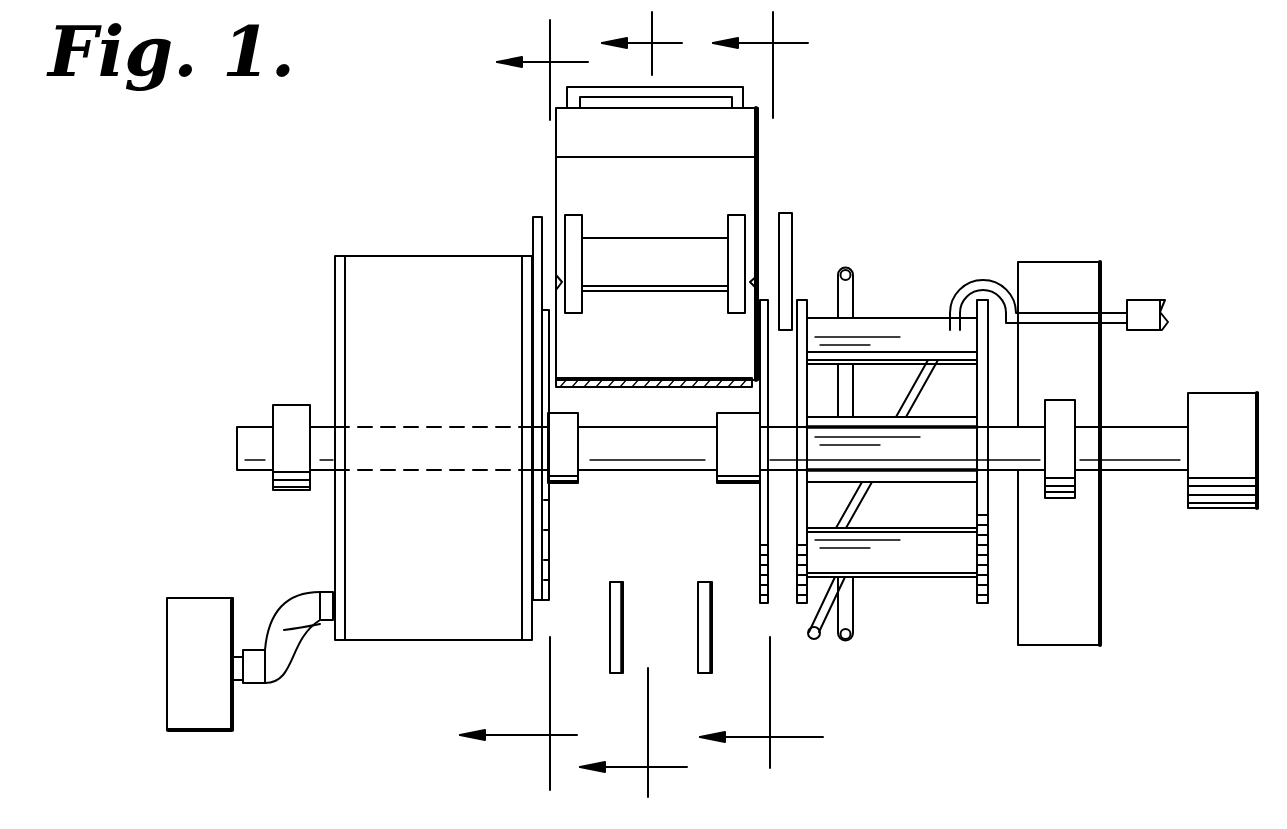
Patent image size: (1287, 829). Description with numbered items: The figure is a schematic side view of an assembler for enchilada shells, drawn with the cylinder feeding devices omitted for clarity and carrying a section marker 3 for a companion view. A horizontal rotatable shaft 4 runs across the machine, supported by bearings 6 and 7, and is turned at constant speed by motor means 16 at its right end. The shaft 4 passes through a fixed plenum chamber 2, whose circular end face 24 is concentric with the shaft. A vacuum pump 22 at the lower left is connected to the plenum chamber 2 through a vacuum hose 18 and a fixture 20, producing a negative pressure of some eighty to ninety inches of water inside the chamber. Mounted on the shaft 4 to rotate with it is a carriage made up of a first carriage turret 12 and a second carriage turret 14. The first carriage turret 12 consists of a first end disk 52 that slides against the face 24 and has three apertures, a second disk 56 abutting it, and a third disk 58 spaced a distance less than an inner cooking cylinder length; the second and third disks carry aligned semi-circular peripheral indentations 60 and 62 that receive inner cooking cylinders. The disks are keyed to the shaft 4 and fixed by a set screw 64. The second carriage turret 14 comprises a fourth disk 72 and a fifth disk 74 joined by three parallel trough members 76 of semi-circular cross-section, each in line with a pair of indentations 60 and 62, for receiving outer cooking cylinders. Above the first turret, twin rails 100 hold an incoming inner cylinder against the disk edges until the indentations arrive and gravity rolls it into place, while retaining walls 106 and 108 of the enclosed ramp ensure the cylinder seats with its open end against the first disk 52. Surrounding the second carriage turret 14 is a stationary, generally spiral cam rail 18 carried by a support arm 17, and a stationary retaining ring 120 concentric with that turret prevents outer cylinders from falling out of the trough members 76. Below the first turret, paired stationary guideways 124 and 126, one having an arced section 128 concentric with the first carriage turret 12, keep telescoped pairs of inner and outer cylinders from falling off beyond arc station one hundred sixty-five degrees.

The plenum chamber 2 is at (446, 260).
The section line 3- 3 is at (761, 395).
The horizontal rotatable shaft 4 is at (660, 471).
The bearing 6 is at (288, 514).
The bearing 7 is at (1076, 400).
The first carriage turret 12 is at (650, 646).
The second carriage turret 14 is at (900, 263).
The motor means 16 is at (1228, 400).
The support arm 17 is at (1058, 303).
The cam rail / vacuum hose 18 is at (267, 677).
The fixture 20 is at (328, 636).
The vacuum pump 22 is at (182, 694).
The circular end face 24 is at (538, 632).
The first end disk 52 is at (546, 606).
The second disk 56 is at (570, 512).
The third disk 58 is at (762, 530).
The semi-circular peripheral indentations 60 is at (549, 561).
The semi-circular peripheral indentations 62 is at (740, 592).
The set screw 64 is at (578, 422).
The fourth disk 72 is at (803, 300).
The fifth disk 74 is at (990, 390).
The trough members 76 is at (897, 318).
The twin rails 100 is at (728, 232).
The retaining wall 106 is at (543, 216).
The retaining wall 108 is at (793, 228).
The retaining ring 120 is at (850, 638).
The guideway 124 is at (611, 648).
The guideway 126 is at (733, 672).
The arced section 128 is at (752, 548).